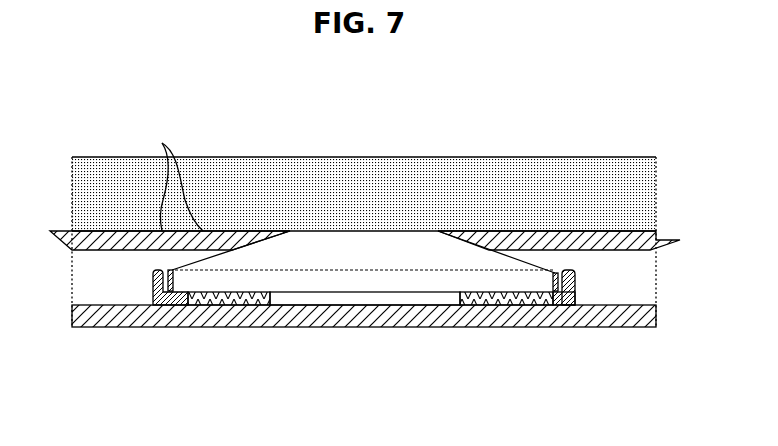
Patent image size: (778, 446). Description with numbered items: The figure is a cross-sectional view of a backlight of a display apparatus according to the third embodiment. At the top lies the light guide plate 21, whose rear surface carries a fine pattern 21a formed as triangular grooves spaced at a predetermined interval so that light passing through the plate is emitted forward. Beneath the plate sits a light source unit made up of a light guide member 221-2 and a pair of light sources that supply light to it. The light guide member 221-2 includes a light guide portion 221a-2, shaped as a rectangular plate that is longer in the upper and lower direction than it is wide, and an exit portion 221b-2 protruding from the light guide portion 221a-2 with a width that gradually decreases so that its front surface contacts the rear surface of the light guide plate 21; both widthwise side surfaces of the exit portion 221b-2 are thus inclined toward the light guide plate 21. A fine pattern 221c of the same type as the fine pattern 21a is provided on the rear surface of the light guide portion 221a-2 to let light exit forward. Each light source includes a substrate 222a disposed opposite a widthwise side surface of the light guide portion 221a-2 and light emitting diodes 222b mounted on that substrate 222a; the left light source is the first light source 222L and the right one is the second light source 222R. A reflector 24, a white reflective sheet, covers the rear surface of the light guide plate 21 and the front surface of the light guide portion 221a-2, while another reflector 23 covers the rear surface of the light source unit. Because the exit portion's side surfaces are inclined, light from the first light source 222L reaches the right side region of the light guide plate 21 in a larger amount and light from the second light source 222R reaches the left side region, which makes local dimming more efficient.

The light guide plate 21 is at (547, 157).
The fine pattern 21a is at (175, 178).
The reflector 24 is at (108, 250).
The reflector 23 is at (206, 310).
The light guide member 221-2 is at (363, 326).
The light guide portion 221a-2 is at (413, 278).
The exit portion 221b-2 is at (335, 253).
The fine pattern 221c is at (292, 293).
The first light source 222L is at (152, 292).
The second light source 222R is at (581, 345).
The substrate 222a is at (578, 284).
The light emitting diode 222b is at (563, 300).